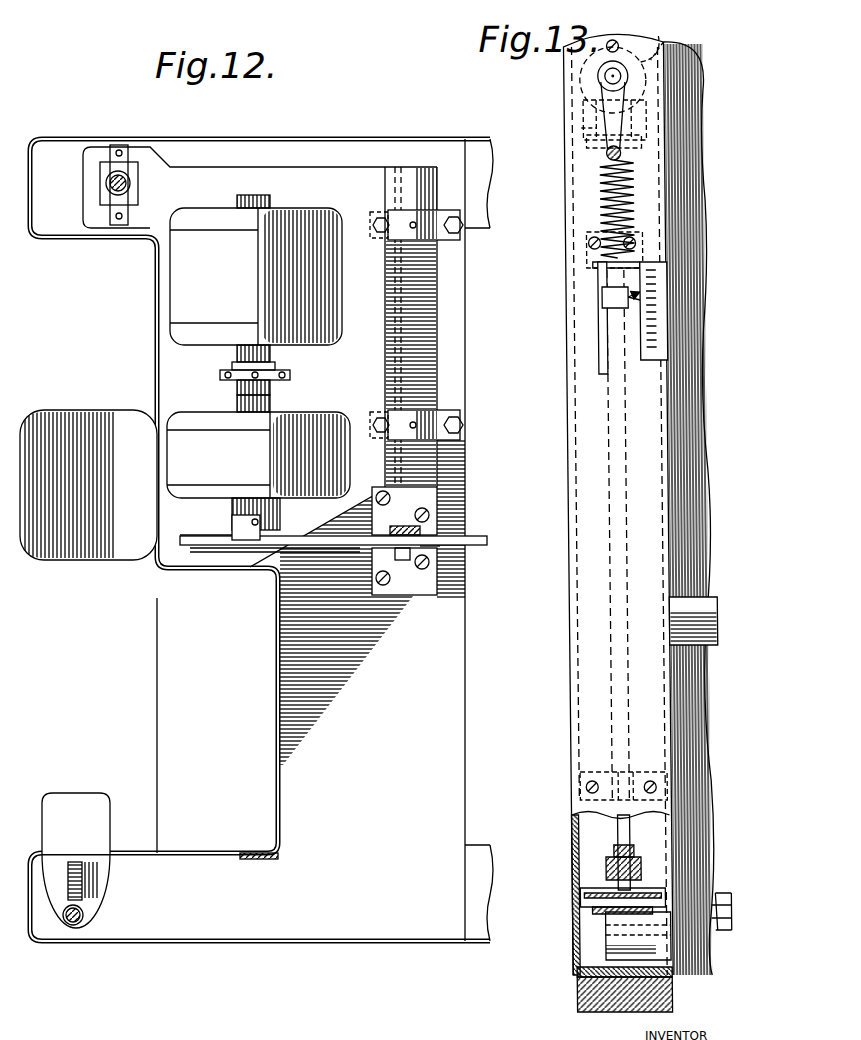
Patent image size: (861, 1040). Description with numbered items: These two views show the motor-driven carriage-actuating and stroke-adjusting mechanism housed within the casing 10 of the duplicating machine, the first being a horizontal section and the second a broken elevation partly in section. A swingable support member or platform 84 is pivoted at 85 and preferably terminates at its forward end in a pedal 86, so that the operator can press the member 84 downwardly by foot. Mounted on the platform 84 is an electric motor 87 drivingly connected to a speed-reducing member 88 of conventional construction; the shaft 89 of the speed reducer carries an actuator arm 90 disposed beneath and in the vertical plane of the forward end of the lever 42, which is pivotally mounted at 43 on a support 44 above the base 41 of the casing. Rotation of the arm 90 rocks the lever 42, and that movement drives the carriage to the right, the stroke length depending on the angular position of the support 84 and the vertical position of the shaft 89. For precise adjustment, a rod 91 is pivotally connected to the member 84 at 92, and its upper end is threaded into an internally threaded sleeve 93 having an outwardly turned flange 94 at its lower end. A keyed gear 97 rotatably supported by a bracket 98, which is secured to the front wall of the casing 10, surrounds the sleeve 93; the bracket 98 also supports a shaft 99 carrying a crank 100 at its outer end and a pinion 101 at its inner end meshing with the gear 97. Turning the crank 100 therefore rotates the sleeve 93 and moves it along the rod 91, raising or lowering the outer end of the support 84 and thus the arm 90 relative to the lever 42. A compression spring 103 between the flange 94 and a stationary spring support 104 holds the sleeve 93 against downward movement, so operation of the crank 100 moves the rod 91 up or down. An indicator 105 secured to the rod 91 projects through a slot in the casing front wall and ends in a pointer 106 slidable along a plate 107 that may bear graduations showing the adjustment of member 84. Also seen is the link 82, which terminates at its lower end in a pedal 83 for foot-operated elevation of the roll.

In FIG. 12, the casing 10 is at (343, 943).
In FIG. 13, the casing 10 is at (561, 680).
In FIG. 12, the base 41 is at (490, 203).
In FIG. 13, the base 41 is at (519, 205).
In FIG. 12, the lever 42 is at (487, 537).
In FIG. 12, the pivot 43 is at (410, 562).
In FIG. 12, the support 44 is at (430, 548).
In FIG. 12, the link 82 is at (73, 926).
In FIG. 12, the pedal 83 is at (77, 812).
In FIG. 12, the support member 84 is at (370, 325).
In FIG. 13, the support member 84 is at (726, 893).
In FIG. 12, the pivot 85 is at (382, 182).
In FIG. 13, the pivot 85 is at (605, 956).
In FIG. 12, the pedal 86 is at (92, 548).
In FIG. 12, the electric motor 87 is at (307, 212).
In FIG. 12, the speed-reducing member 88 is at (326, 414).
In FIG. 12, the shaft 89 is at (262, 552).
In FIG. 12, the actuator arm 90 is at (215, 538).
In FIG. 12, the rod 91 is at (140, 190).
In FIG. 13, the rod 91 is at (606, 597).
In FIG. 12, the pivotal connection 92 is at (130, 165).
In FIG. 13, the pivotal connection 92 is at (640, 892).
In FIG. 13, the internally threaded sleeve 93 is at (650, 48).
In FIG. 13, the flange 94 is at (603, 154).
In FIG. 13, the gear 97 is at (580, 97).
In FIG. 13, the bracket 98 is at (581, 135).
In FIG. 13, the shaft 99 is at (597, 75).
In FIG. 13, the crank 100 is at (614, 128).
In FIG. 13, the pinion 101 is at (668, 46).
In FIG. 13, the spring 103 is at (597, 180).
In FIG. 13, the spring support 104 is at (590, 270).
In FIG. 13, the indicator 105 is at (599, 298).
In FIG. 13, the pointer 106 is at (636, 292).
In FIG. 13, the plate 107 is at (666, 330).